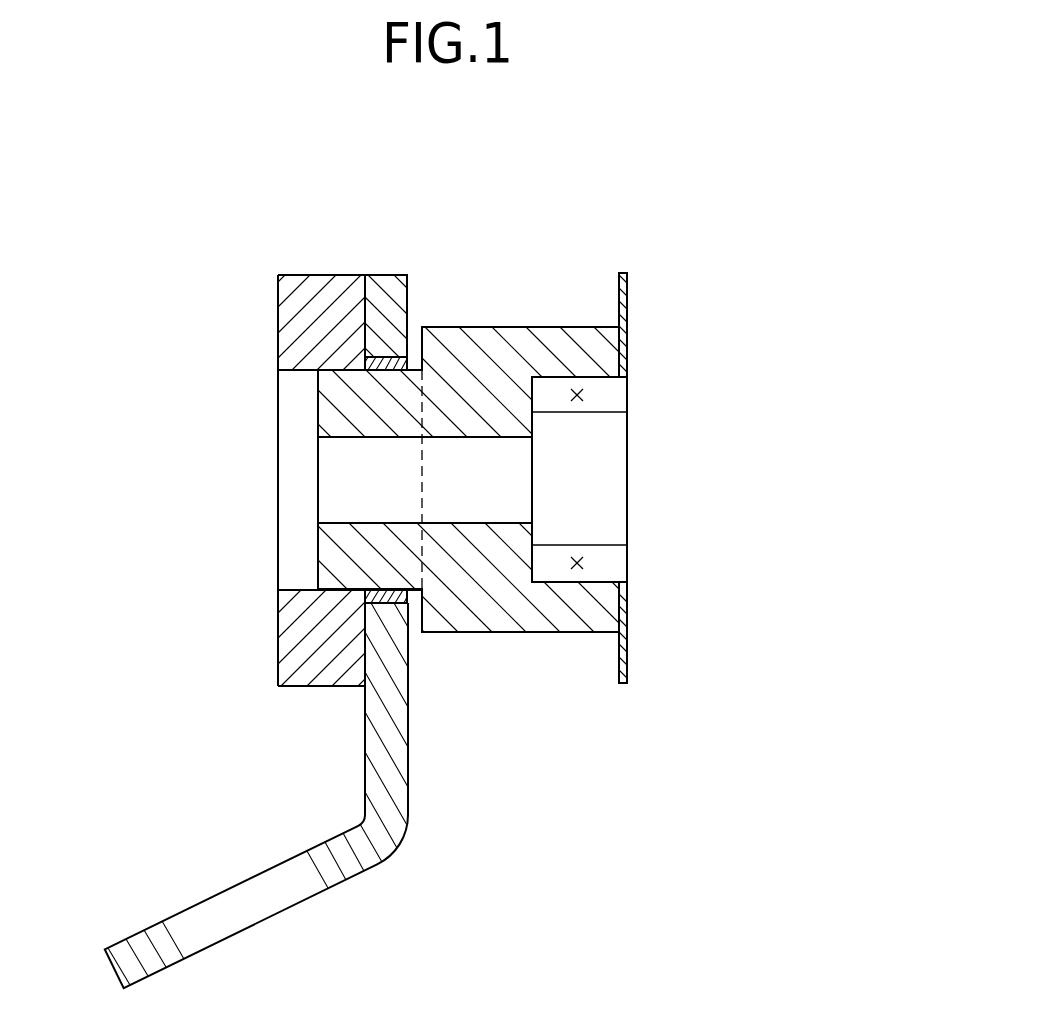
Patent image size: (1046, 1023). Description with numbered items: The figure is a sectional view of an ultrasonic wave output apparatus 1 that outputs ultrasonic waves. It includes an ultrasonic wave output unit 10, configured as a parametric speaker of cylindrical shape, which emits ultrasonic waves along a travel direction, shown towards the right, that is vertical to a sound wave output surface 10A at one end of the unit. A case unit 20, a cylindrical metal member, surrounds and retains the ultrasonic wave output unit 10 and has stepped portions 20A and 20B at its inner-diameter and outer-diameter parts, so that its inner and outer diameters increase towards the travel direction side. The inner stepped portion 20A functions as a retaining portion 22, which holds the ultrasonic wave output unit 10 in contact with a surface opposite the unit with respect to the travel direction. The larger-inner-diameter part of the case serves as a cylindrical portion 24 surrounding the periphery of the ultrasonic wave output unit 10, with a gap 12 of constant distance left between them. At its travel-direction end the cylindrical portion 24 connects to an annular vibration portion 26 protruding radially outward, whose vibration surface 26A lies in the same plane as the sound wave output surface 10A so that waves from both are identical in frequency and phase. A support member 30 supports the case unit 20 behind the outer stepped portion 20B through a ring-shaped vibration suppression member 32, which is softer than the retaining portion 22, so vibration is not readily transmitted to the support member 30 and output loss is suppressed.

The ultrasonic wave output apparatus 1 is at (692, 158).
The ultrasonic wave output unit 10 is at (635, 485).
The sound wave output surface 10A is at (628, 485).
The gap 12 is at (577, 395).
The case unit 20 is at (528, 521).
The stepped portion 20A is at (530, 395).
The stepped portion 20B is at (516, 658).
The retaining portion 22 is at (495, 548).
The cylindrical portion 24 is at (597, 350).
The vibration portion 26 is at (627, 305).
The vibration surface 26A is at (630, 285).
The support member 30 is at (377, 863).
The vibration suppression member 32 is at (382, 353).